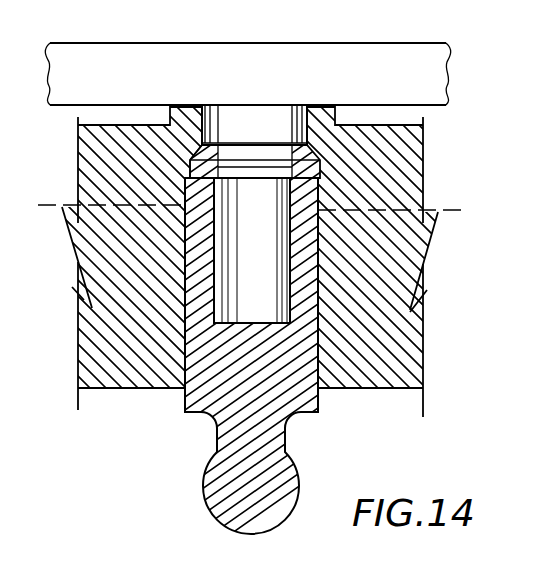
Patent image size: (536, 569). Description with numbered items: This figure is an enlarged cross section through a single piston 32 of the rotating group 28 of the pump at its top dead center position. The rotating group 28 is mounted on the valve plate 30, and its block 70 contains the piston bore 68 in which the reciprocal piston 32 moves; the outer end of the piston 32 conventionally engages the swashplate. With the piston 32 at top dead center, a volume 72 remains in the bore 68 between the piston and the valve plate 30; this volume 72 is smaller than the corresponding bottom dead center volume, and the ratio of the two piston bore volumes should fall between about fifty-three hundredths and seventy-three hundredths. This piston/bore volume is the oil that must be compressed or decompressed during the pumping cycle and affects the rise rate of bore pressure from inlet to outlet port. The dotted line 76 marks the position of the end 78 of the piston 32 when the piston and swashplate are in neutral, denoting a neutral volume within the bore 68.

The rotating group 28 is at (268, 258).
The valve plate 30 is at (108, 55).
The piston 32 is at (278, 461).
The piston bore 68 is at (187, 152).
The block 70 is at (410, 370).
The volume 72 is at (263, 118).
The dotted line 76 is at (437, 207).
The end of piston 78 is at (305, 166).